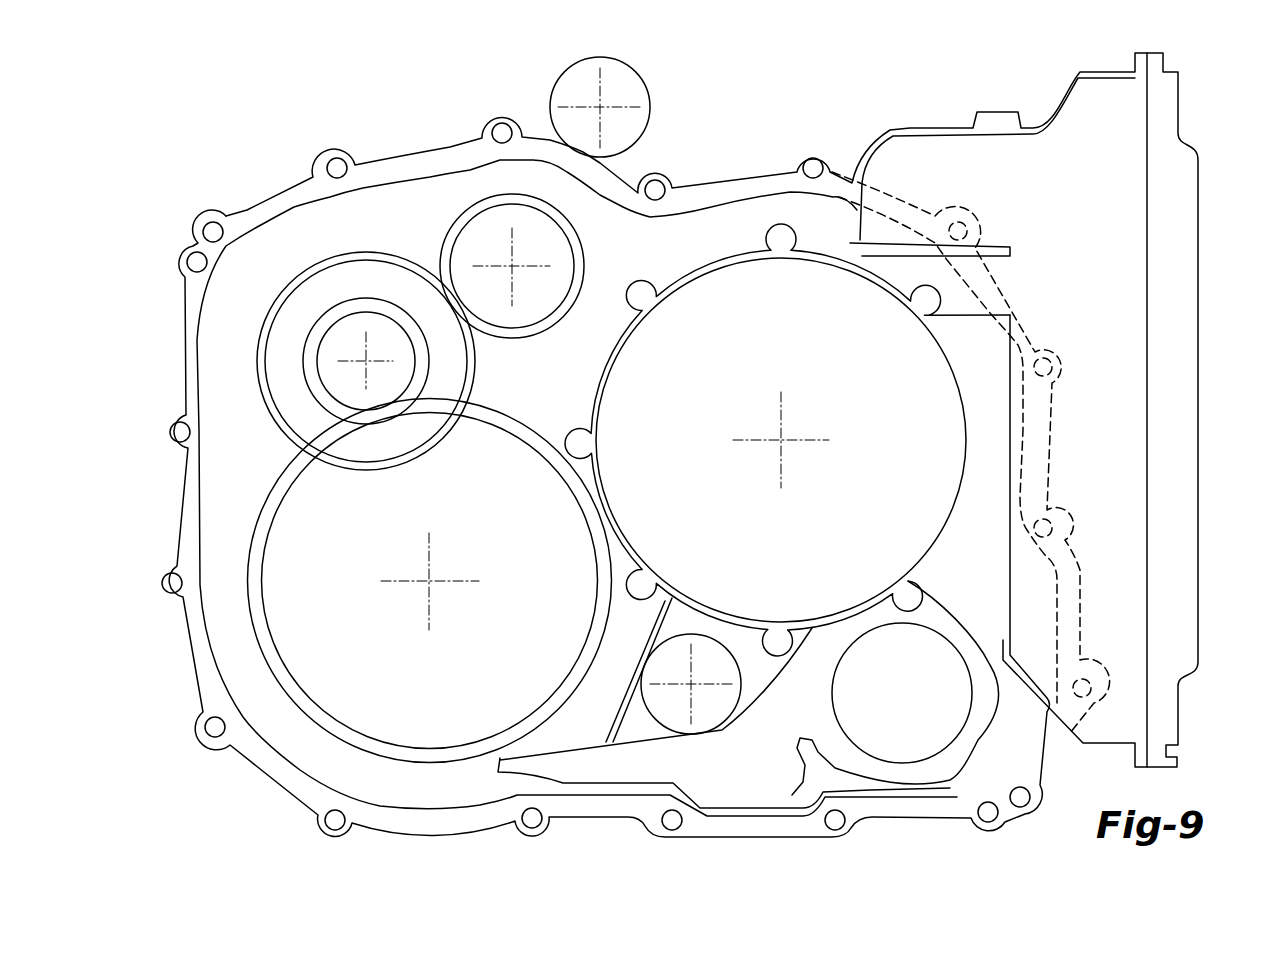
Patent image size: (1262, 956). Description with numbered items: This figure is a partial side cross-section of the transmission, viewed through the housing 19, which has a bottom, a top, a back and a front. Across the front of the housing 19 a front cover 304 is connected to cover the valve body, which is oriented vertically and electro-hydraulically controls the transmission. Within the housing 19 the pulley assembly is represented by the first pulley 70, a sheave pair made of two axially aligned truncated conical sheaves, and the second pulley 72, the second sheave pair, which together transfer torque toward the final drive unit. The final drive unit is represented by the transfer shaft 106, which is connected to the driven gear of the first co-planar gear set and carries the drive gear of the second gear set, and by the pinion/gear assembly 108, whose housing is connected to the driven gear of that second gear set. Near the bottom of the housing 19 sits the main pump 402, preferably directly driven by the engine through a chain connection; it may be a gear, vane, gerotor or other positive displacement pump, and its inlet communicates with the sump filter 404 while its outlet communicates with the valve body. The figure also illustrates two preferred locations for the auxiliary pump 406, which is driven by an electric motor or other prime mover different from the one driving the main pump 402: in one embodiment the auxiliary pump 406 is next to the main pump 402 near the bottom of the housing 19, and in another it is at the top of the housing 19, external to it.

The housing 19 is at (417, 150).
The first pulley 70 is at (718, 252).
The second pulley 72 is at (303, 713).
The transfer shaft 106 is at (367, 363).
The pinion/gear assembly 108 is at (514, 268).
The auxiliary pump 406 is at (645, 83).
The front cover 304 is at (1175, 152).
The main pump 402 is at (885, 752).
The sump filter 404 is at (627, 778).